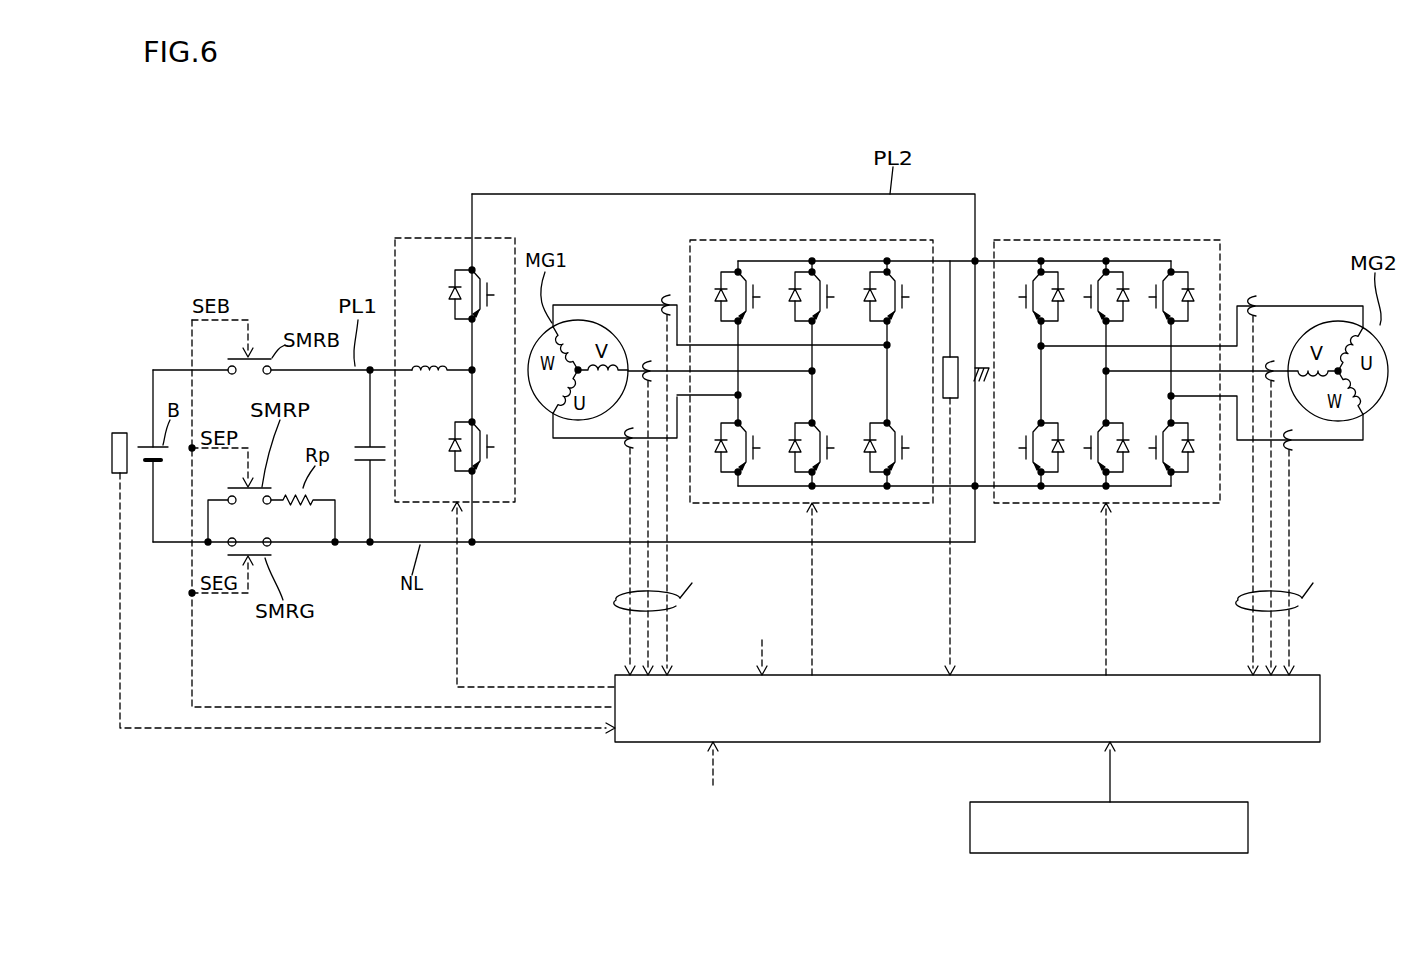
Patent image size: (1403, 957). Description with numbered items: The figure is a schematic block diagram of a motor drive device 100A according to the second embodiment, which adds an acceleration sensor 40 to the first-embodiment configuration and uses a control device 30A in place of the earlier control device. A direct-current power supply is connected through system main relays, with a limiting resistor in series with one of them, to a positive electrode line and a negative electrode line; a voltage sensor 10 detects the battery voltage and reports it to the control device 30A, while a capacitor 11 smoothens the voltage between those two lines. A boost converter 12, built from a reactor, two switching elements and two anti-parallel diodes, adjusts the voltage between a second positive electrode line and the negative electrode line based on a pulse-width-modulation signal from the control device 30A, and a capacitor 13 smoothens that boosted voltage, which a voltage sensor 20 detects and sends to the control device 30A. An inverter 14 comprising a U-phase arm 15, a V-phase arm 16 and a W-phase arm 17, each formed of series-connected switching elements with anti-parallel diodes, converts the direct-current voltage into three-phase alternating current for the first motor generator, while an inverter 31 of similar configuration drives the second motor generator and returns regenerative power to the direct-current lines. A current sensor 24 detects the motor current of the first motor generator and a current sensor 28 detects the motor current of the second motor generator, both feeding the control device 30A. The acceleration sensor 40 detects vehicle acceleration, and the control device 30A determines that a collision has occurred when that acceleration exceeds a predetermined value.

The voltage sensor 10 is at (118, 432).
The capacitor 11 is at (356, 446).
The boost converter 12 is at (412, 238).
The capacitor 13 is at (986, 380).
The inverter 14 is at (812, 240).
The U-phase arm 15 is at (772, 404).
The V-phase arm 16 is at (848, 381).
The W-phase arm 17 is at (922, 356).
The voltage sensor 20 is at (950, 356).
The current sensor 24 is at (665, 298).
The current sensor 28 is at (1253, 298).
The inverter 31 is at (1117, 240).
The control device 30A is at (1320, 704).
The acceleration sensor 40 is at (1207, 802).
The motor drive device 100A is at (768, 116).